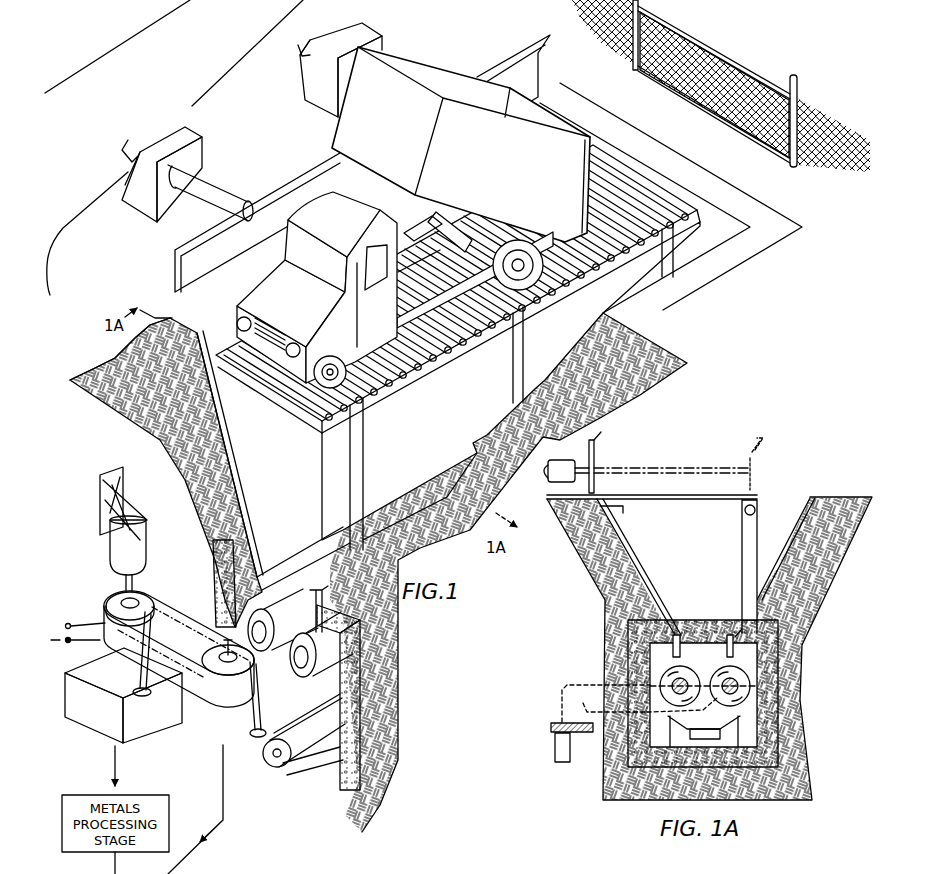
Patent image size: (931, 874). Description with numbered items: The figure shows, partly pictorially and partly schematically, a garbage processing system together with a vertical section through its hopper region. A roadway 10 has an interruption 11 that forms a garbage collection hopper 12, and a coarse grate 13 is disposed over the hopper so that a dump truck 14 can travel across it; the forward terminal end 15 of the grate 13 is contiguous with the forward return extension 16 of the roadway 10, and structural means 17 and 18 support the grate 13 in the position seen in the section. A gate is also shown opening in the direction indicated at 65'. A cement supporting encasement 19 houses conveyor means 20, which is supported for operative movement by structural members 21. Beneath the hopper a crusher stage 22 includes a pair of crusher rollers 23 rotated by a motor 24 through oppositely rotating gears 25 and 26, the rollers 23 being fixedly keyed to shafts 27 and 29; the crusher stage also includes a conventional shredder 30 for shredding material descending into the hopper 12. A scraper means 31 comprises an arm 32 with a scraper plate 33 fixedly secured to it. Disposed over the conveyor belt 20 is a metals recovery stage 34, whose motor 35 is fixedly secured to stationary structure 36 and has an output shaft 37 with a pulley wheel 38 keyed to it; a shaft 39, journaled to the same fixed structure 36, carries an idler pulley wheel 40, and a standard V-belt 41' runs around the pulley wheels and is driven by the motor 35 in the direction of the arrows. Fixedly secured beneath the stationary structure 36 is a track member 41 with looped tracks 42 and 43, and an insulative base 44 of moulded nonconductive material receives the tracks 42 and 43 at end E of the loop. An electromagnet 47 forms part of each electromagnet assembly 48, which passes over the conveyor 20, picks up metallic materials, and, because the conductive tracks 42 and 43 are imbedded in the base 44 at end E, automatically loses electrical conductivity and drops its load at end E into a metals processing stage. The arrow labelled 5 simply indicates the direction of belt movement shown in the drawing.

In FIG. 1, the roadway 10 is at (766, 56).
In FIG. 1, the gate 65' is at (721, 86).
In FIG. 1, the interruption 11 is at (733, 217).
In FIG. 1, the garbage collection hopper 12 is at (692, 253).
In FIG. 1A, the garbage collection hopper 12 is at (672, 564).
In FIG. 1, the coarse grate 13 is at (655, 180).
In FIG. 1, the dump truck 14 is at (309, 198).
In FIG. 1, the forward terminal end 15 is at (275, 382).
In FIG. 1, the forward return extension 16 is at (68, 340).
In FIG. 1, the structural means 17 is at (207, 350).
In FIG. 1A, the structural means 17 is at (612, 510).
In FIG. 1, the structural means 18 is at (515, 357).
In FIG. 1A, the structural means 18 is at (753, 537).
In FIG. 1A, the cement supporting encasement 19 is at (773, 660).
In FIG. 1, the conveyor means 20 is at (276, 701).
In FIG. 1A, the conveyor means 20 is at (680, 747).
In FIG. 1A, the structural members 21 is at (717, 742).
In FIG. 1A, the crusher stage 22 is at (770, 672).
In FIG. 1A, the crusher rollers 23 is at (690, 670).
In FIG. 1A, the motor 24 is at (554, 749).
In FIG. 1A, the gear 25 is at (557, 722).
In FIG. 1A, the gear 26 is at (585, 733).
In FIG. 1A, the shaft 27 is at (587, 686).
In FIG. 1A, the shaft 29 is at (602, 692).
In FIG. 1A, the shredder 30 is at (707, 620).
In FIG. 1, the scraper means 31 is at (190, 130).
In FIG. 1A, the scraper means 31 is at (572, 449).
In FIG. 1, the arm 32 is at (218, 192).
In FIG. 1A, the arm 32 is at (597, 450).
In FIG. 1, the scraper plate 33 is at (178, 256).
In FIG. 1A, the scraper plate 33 is at (594, 483).
In FIG. 1, the metals recovery stage 34 is at (158, 592).
In FIG. 1, the motor 35 is at (117, 542).
In FIG. 1, the stationary structure 36 is at (100, 503).
In FIG. 1, the output shaft 37 is at (125, 577).
In FIG. 1, the pulley wheel 38 is at (107, 607).
In FIG. 1, the shaft 39 is at (245, 637).
In FIG. 1, the idler pulley wheel 40 is at (222, 672).
In FIG. 1, the track member 41 is at (149, 667).
In FIG. 1, the V-belt 41' is at (174, 585).
In FIG. 1, the looped track 42 is at (172, 692).
In FIG. 1, the looped track 43 is at (180, 703).
In FIG. 1, the insulative base 44 is at (204, 727).
In FIG. 1, the electromagnet 47 is at (256, 738).
In FIG. 1, the electromagnet assembly 48 is at (256, 686).
In FIG. 1, the direction arrow 5 is at (222, 671).
In FIG. 1, the end E is at (100, 621).